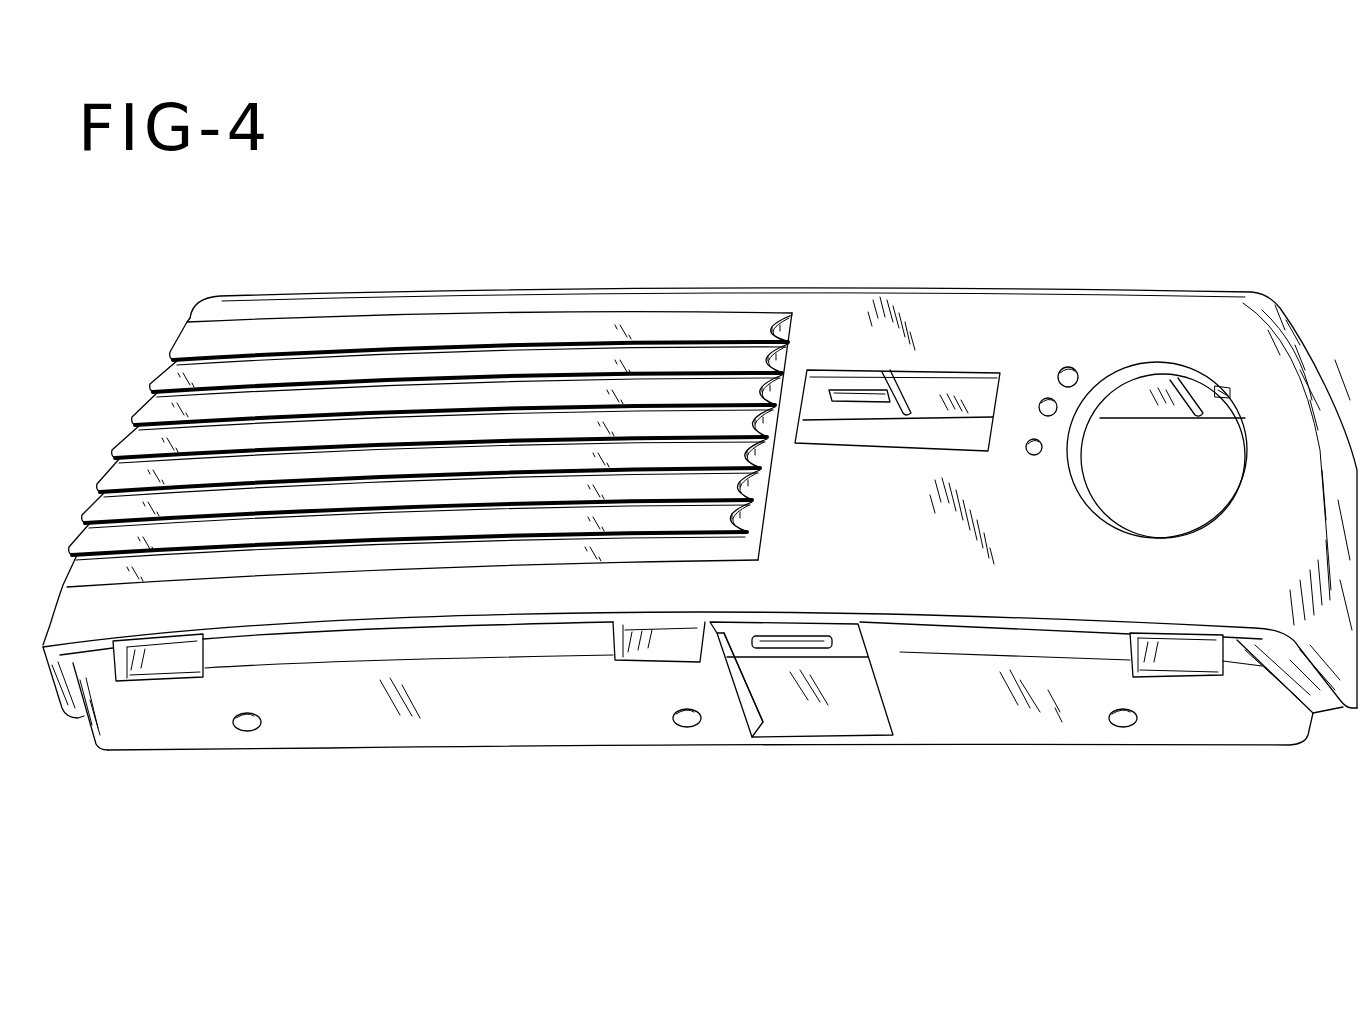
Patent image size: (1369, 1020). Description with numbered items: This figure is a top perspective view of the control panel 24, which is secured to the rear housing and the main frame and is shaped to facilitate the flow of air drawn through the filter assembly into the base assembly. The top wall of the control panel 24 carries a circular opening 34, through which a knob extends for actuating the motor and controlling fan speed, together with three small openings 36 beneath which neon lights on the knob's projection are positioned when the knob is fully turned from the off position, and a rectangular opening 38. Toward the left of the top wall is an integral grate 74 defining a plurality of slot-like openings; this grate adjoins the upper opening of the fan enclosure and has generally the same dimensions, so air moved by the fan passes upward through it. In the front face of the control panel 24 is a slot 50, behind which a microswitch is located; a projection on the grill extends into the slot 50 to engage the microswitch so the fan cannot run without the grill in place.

The control panel 24 is at (700, 484).
The integral grate 74 is at (330, 352).
The rectangular opening 38 is at (958, 378).
The three small openings 36 is at (1023, 437).
The circular opening 34 is at (1103, 395).
The slot 50 is at (650, 648).